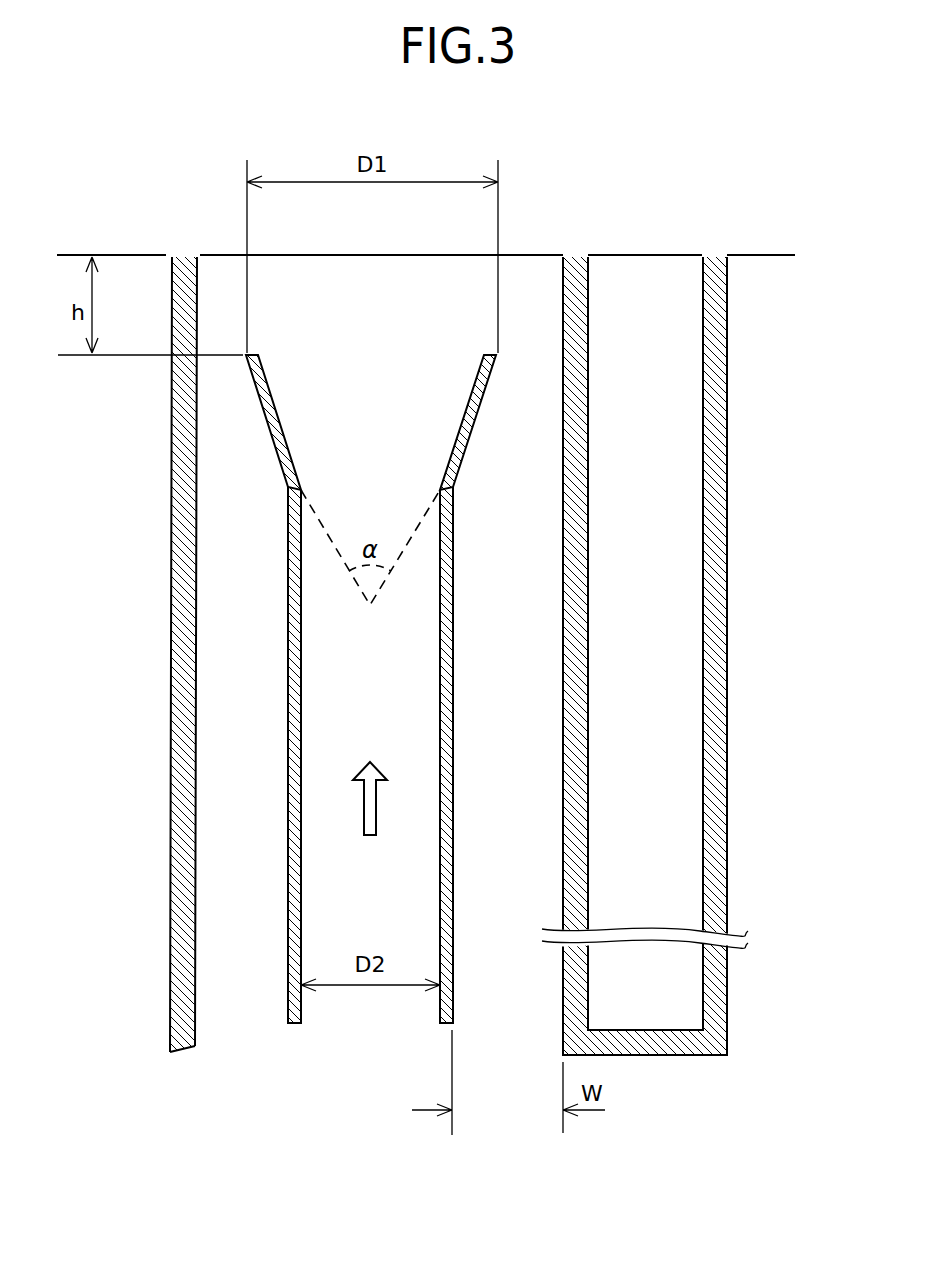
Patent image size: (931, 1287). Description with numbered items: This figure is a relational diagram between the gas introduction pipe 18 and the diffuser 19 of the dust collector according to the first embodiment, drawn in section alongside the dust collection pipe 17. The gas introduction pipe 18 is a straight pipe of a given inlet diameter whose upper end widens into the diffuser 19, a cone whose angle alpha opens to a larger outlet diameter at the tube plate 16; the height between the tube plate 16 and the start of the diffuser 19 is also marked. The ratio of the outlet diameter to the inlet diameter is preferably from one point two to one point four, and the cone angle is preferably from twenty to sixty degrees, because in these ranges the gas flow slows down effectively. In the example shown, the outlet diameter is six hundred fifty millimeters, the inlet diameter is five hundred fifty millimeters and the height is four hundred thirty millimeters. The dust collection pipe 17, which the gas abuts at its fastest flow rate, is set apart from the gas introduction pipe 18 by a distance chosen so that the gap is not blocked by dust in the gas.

The tube plate 16 is at (542, 255).
The dust collection pipe 17 is at (727, 525).
The gas introduction pipe 18 is at (288, 683).
The diffuser 19 is at (268, 432).